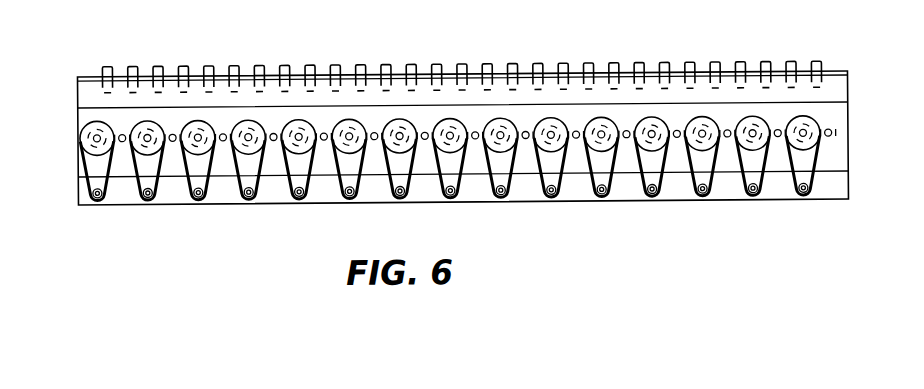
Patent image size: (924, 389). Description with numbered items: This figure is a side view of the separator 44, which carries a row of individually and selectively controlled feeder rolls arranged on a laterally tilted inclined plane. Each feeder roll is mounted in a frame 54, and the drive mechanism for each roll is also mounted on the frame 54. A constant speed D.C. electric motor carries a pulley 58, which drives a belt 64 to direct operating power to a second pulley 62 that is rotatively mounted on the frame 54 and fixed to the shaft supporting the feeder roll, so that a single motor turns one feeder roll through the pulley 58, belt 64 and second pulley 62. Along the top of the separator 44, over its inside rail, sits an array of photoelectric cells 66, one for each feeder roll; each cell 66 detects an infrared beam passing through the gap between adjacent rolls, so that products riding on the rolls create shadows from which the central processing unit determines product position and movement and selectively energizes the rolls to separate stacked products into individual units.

The separator 44 is at (634, 243).
The frame 54 is at (833, 168).
The pulley 58 is at (342, 194).
The second pulley 62 is at (183, 152).
The belt 64 is at (283, 172).
The photoelectric cells 66 is at (435, 66).